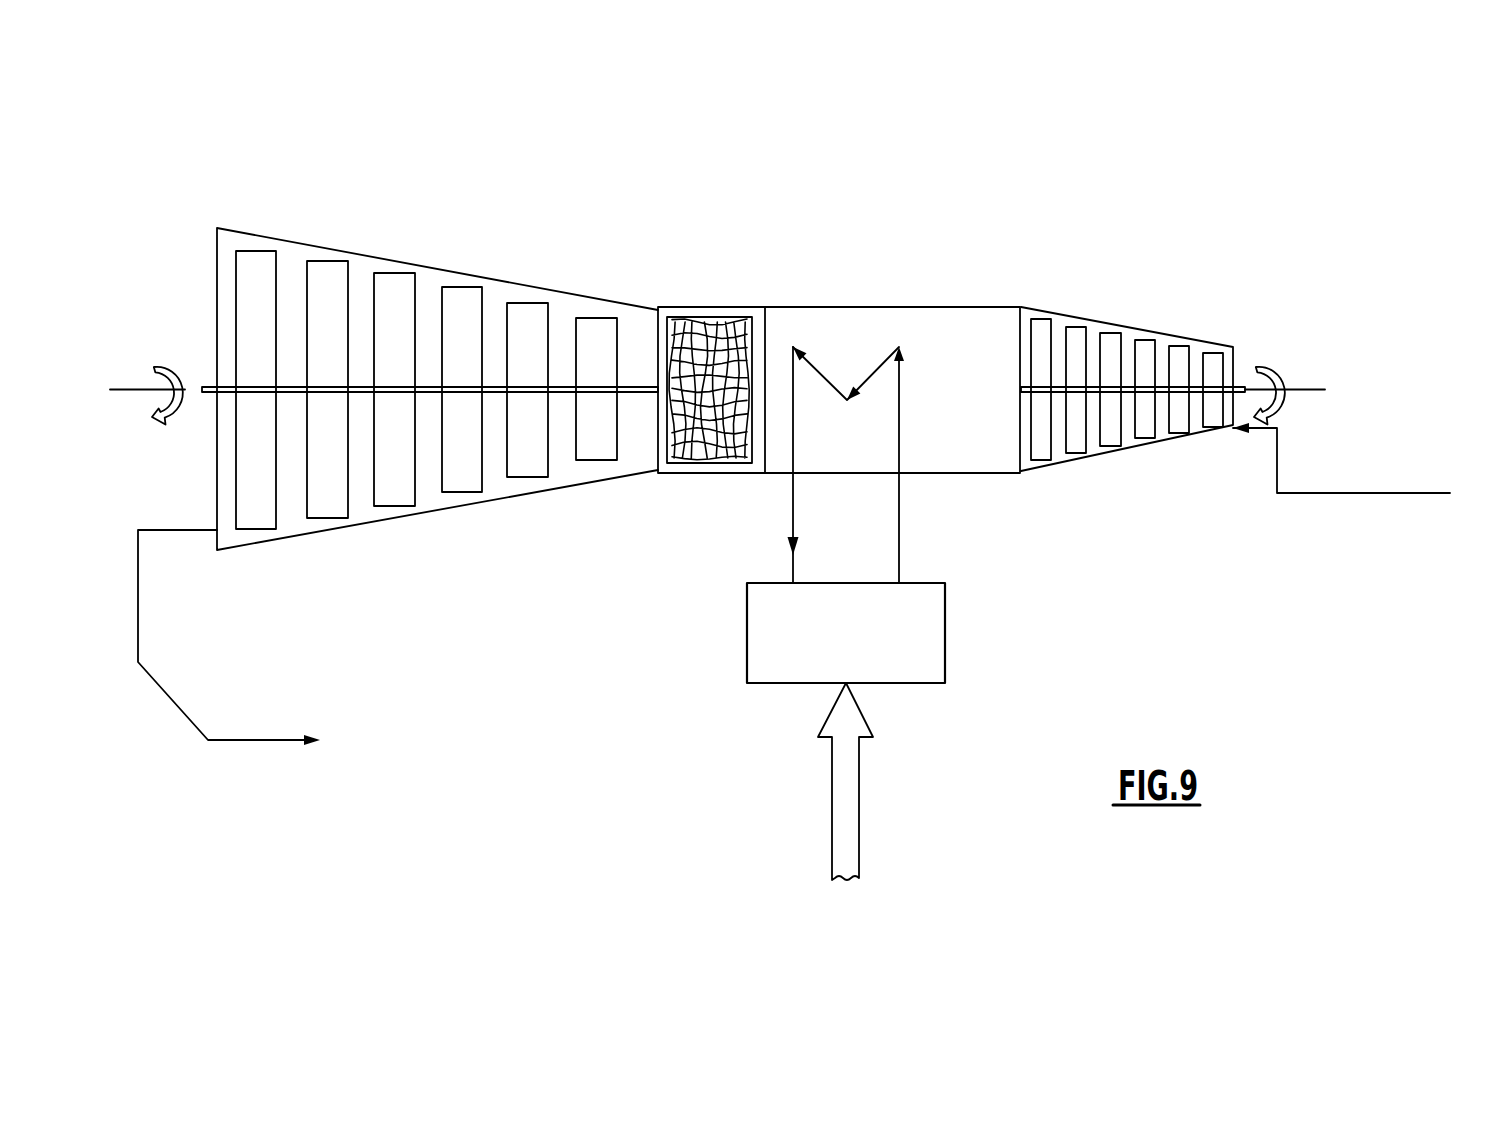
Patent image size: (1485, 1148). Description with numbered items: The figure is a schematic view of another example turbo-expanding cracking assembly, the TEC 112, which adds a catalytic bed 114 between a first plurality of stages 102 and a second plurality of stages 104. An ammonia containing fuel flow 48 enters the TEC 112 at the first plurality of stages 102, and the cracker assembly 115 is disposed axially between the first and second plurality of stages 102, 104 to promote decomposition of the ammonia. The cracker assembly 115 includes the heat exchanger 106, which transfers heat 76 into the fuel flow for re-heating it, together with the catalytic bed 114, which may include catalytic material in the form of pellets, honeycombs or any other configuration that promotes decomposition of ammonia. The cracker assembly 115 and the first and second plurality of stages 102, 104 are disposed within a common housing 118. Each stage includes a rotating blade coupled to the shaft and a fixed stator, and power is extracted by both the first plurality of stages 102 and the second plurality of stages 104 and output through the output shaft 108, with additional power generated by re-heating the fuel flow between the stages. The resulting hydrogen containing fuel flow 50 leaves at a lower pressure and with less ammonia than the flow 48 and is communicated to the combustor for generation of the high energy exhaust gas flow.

The turbo-expanding cracking assembly 112 is at (1125, 176).
The cracker assembly 115 is at (658, 227).
The catalytic bed 114 is at (714, 296).
The common housing 118 is at (1141, 316).
The output shaft 108 is at (1305, 388).
The ammonia containing fuel flow 48 is at (1312, 494).
The first plurality of stages 102 is at (1021, 507).
The second plurality of stages 104 is at (217, 583).
The hydrogen containing fuel flow 50 is at (185, 718).
The heat exchanger 106 is at (823, 645).
The heat 76 is at (850, 828).